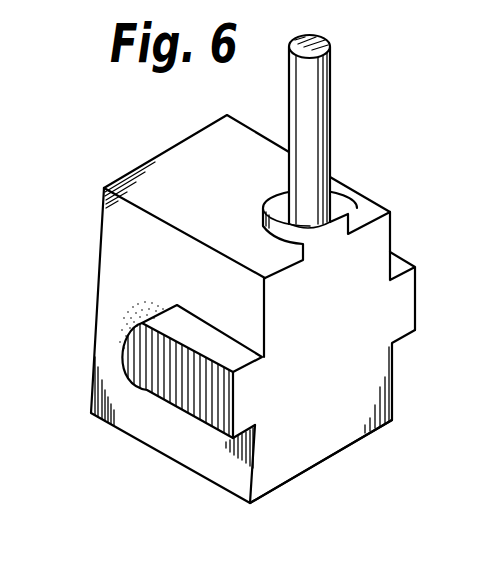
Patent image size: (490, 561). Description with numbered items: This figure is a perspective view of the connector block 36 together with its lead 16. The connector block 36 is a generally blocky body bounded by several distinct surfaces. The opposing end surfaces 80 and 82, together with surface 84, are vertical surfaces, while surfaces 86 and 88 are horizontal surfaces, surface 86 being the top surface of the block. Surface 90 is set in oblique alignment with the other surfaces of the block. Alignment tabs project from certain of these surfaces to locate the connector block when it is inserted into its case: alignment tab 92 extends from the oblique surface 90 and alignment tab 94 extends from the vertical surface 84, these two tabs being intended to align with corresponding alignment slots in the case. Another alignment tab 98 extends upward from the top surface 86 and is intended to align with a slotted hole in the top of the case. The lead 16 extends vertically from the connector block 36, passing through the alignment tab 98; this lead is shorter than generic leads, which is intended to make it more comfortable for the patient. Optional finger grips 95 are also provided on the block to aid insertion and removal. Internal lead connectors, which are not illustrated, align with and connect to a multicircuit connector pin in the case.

The lead 16 is at (310, 90).
The connector block 36 is at (392, 181).
The end surface 80 is at (341, 342).
The end surface 82 is at (143, 242).
The surface 84 is at (374, 248).
The top surface 86 is at (222, 182).
The surface 88 is at (333, 446).
The surface 90 is at (142, 280).
The alignment tab 92 is at (170, 395).
The alignment tab 94 is at (417, 313).
The finger grips 95 is at (198, 408).
The alignment tab 98 is at (281, 205).